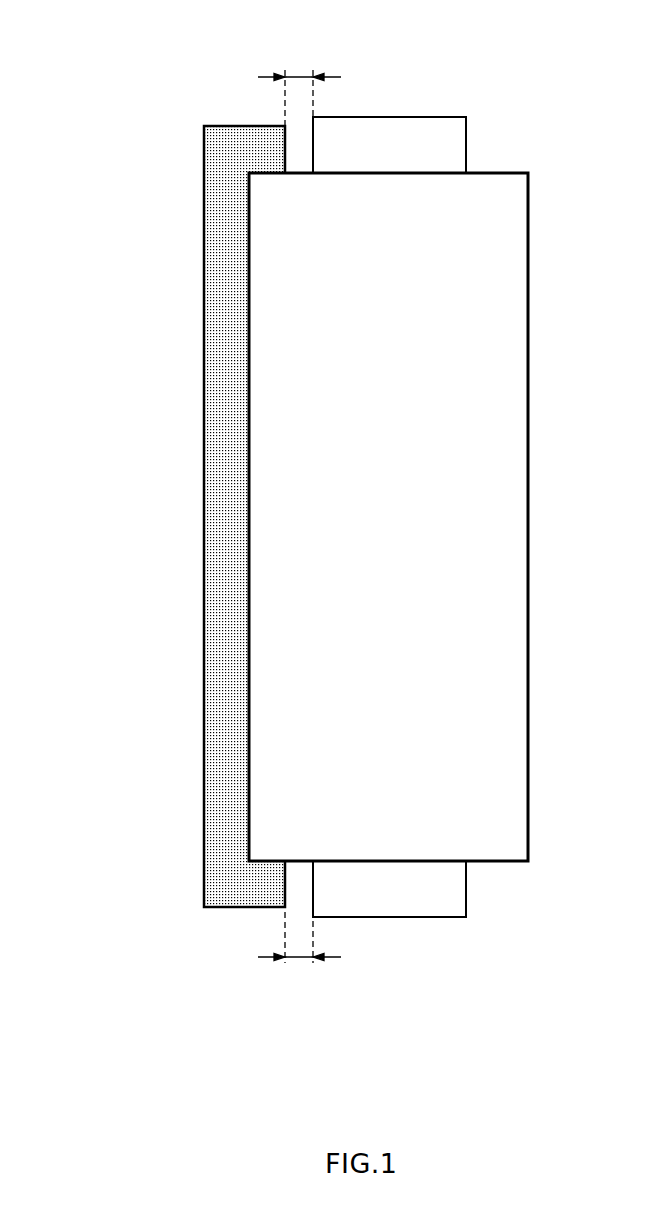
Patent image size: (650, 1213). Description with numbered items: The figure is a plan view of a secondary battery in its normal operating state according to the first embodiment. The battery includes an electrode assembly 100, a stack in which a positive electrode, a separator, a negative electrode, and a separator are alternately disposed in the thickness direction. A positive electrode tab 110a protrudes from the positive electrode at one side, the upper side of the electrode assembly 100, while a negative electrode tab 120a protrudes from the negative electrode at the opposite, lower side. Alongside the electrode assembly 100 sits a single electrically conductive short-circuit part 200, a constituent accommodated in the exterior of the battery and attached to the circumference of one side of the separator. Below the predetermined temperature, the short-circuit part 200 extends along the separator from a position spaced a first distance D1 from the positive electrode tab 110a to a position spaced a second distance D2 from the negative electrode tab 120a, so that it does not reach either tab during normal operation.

The electrode assembly 100 is at (153, 478).
The short-circuit part 200 is at (215, 288).
The positive electrode tab 110a is at (388, 132).
The negative electrode tab 120a is at (389, 903).
The first distance D1 is at (296, 76).
The second distance D2 is at (296, 958).